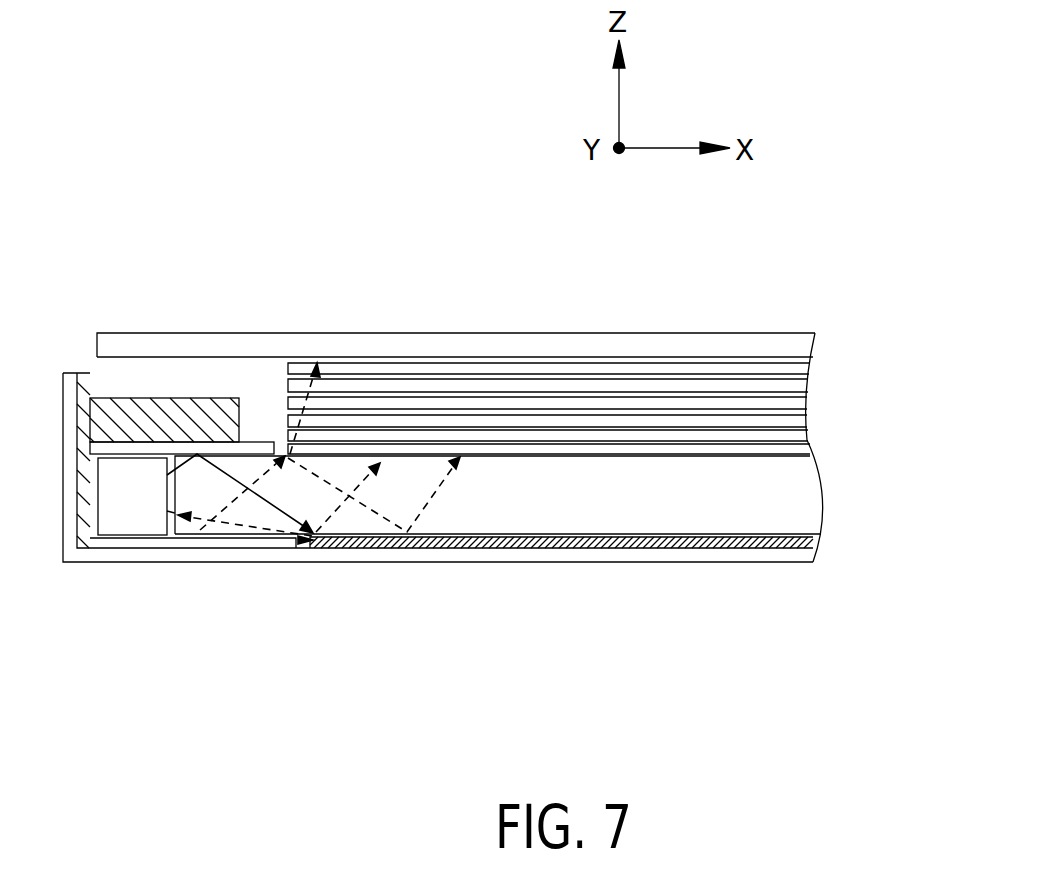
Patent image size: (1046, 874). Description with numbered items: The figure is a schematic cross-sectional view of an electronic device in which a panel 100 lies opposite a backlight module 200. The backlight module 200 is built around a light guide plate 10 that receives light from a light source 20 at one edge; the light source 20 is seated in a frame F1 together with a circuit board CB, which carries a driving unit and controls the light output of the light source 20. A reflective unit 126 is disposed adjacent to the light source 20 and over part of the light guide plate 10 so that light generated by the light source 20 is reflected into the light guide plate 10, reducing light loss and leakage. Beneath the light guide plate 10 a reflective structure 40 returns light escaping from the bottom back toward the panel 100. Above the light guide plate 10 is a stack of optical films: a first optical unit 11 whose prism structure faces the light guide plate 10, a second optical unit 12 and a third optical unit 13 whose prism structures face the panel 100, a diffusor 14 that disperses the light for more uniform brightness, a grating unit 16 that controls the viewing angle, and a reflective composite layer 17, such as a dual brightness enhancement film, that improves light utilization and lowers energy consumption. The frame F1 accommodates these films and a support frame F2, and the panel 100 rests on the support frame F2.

The panel 100 is at (815, 336).
The backlight module 200 is at (887, 342).
The reflective composite layer 17 is at (809, 368).
The grating unit 16 is at (808, 386).
The diffusor 14 is at (807, 403).
The third optical unit 13 is at (807, 421).
The second optical unit 12 is at (808, 436).
The first optical unit 11 is at (810, 450).
The light guide plate 10 is at (806, 508).
The reflective structure 40 is at (813, 542).
The light source 20 is at (120, 505).
The reflective unit 126 is at (177, 448).
The frame F1 is at (78, 548).
The support frame F2 is at (105, 407).
The circuit board CB is at (235, 542).